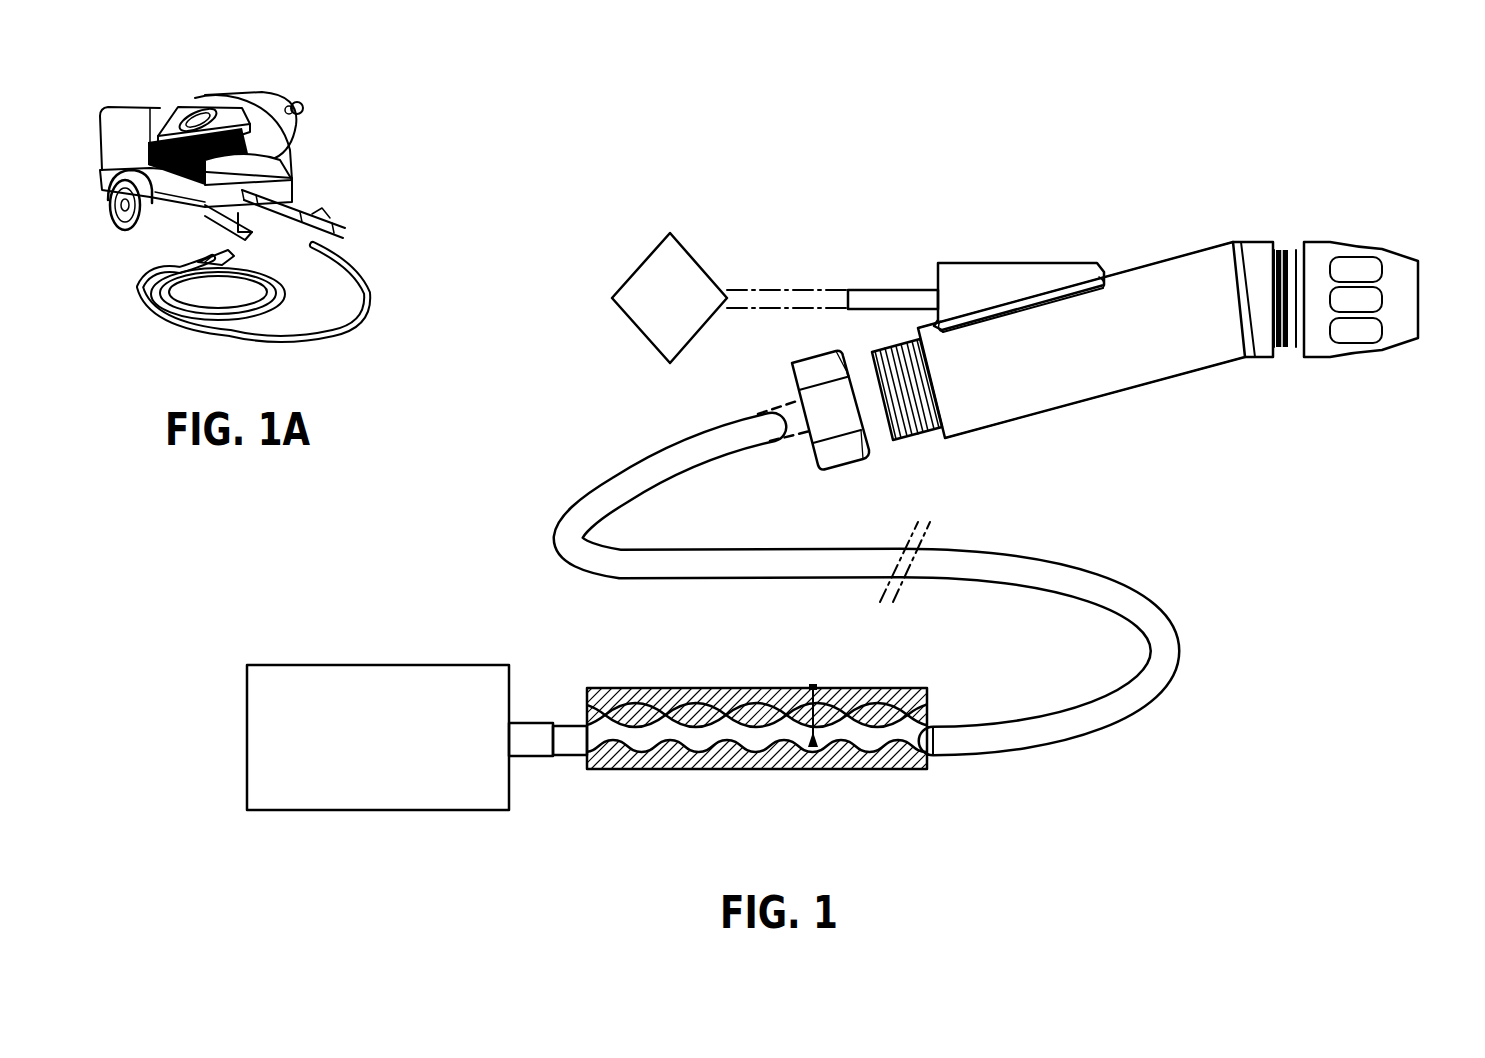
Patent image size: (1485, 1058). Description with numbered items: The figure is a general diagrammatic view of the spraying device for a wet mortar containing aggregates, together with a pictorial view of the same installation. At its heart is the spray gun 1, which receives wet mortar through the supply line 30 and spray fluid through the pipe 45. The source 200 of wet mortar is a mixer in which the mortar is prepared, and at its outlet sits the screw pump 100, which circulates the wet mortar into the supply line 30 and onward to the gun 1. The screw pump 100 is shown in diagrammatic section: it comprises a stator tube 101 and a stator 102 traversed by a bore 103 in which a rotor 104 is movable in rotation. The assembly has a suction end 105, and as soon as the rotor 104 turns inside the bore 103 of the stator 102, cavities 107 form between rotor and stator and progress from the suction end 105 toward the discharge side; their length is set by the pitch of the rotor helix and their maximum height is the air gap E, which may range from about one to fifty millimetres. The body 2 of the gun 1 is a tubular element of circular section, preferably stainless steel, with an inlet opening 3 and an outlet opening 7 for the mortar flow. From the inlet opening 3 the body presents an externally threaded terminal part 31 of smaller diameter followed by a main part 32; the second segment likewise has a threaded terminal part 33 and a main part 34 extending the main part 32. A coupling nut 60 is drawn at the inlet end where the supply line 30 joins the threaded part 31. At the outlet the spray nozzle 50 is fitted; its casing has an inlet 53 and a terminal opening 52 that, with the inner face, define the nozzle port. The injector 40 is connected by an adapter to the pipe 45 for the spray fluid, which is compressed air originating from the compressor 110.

In FIG. 1A, the spray gun 1 is at (205, 258).
In FIG. 1, the spray gun 1 is at (1170, 218).
In FIG. 1, the body 2 is at (1140, 312).
In FIG. 1, the inlet opening 3 is at (910, 429).
In FIG. 1, the outlet opening 7 is at (1284, 252).
In FIG. 1A, the supply line 30 is at (334, 337).
In FIG. 1, the supply line 30 is at (612, 480).
In FIG. 1, the threaded terminal part 31 is at (918, 440).
In FIG. 1, the main part 32 is at (1095, 405).
In FIG. 1, the threaded terminal part 33 is at (1277, 338).
In FIG. 1, the main part 34 is at (1256, 238).
In FIG. 1, the injector 40 is at (889, 288).
In FIG. 1, the pipe 45 is at (797, 283).
In FIG. 1, the spray nozzle 50 is at (1386, 318).
In FIG. 1, the terminal opening 52 is at (1418, 275).
In FIG. 1, the inlet 53 is at (1300, 340).
In FIG. 1, the coupling nut 60 is at (836, 452).
In FIG. 1A, the screw pump 100 is at (310, 219).
In FIG. 1, the screw pump 100 is at (771, 749).
In FIG. 1, the stator tube 101 is at (898, 772).
In FIG. 1, the stator 102 is at (685, 757).
In FIG. 1, the bore 103 is at (588, 718).
In FIG. 1, the rotor 104 is at (643, 740).
In FIG. 1, the suction end 105 is at (587, 758).
In FIG. 1, the cavities 107 is at (648, 714).
In FIG. 1, the compressor 110 is at (669, 298).
In FIG. 1A, the source of wet mortar 200 is at (305, 149).
In FIG. 1, the source of wet mortar 200 is at (378, 737).
In FIG. 1, the air gap E is at (816, 715).